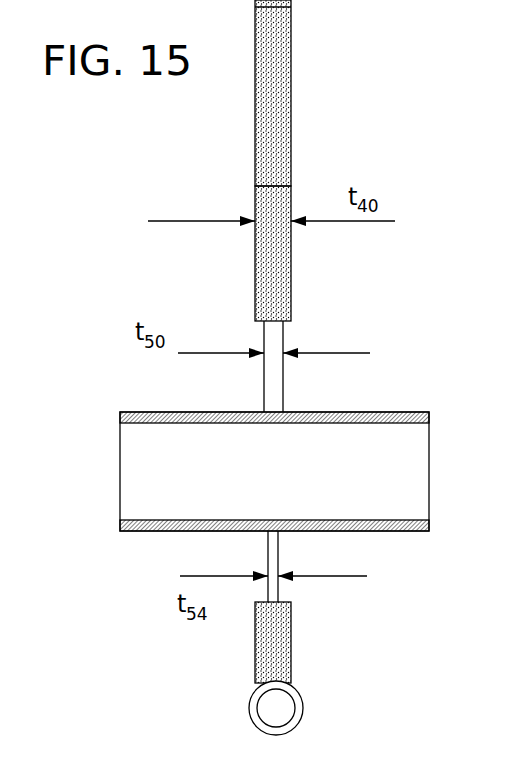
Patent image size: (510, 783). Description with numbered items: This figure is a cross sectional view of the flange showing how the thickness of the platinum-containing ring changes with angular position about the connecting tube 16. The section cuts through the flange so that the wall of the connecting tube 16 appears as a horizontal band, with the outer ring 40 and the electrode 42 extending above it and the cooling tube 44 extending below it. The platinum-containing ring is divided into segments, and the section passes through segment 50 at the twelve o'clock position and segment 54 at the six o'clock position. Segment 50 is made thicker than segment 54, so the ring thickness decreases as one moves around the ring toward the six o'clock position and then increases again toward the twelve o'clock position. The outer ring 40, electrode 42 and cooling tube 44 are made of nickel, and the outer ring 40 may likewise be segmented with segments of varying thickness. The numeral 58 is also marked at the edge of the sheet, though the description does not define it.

The connecting tube 16 is at (183, 412).
The outer ring 40 is at (255, 200).
The electrode 42 is at (292, 68).
The cooling tube 44 is at (250, 718).
The segment 50 is at (273, 366).
The segment 54 is at (273, 566).
The element 58 is at (493, 777).